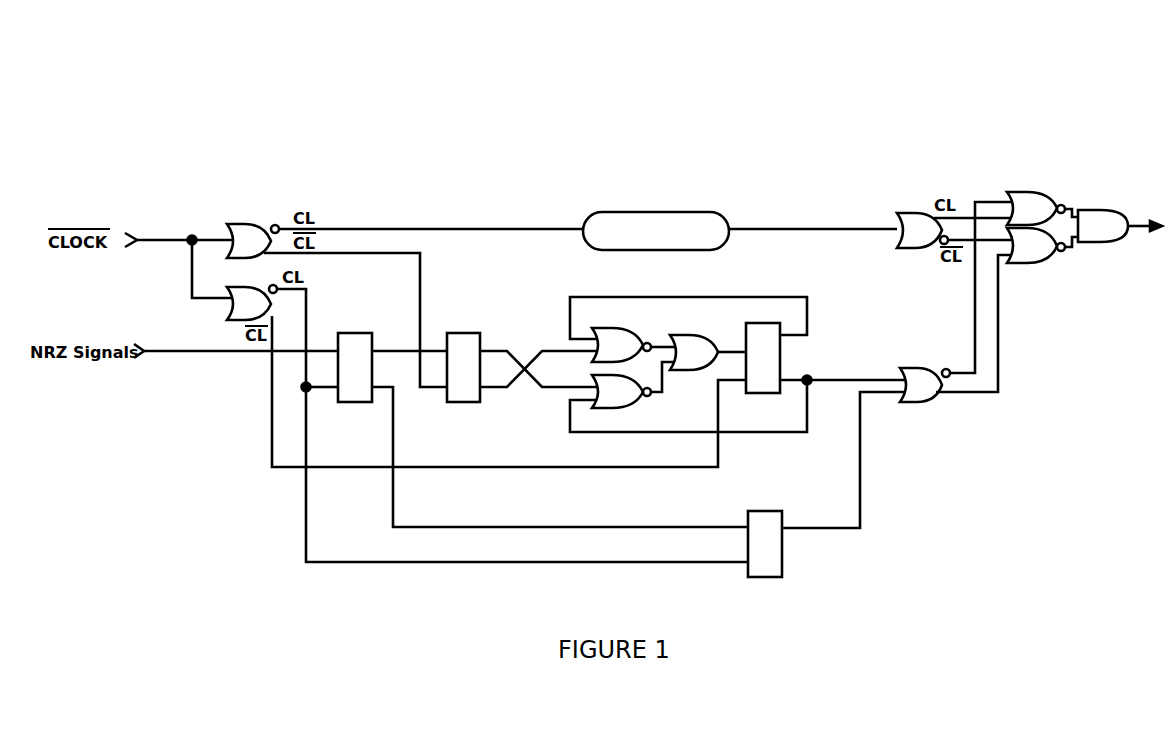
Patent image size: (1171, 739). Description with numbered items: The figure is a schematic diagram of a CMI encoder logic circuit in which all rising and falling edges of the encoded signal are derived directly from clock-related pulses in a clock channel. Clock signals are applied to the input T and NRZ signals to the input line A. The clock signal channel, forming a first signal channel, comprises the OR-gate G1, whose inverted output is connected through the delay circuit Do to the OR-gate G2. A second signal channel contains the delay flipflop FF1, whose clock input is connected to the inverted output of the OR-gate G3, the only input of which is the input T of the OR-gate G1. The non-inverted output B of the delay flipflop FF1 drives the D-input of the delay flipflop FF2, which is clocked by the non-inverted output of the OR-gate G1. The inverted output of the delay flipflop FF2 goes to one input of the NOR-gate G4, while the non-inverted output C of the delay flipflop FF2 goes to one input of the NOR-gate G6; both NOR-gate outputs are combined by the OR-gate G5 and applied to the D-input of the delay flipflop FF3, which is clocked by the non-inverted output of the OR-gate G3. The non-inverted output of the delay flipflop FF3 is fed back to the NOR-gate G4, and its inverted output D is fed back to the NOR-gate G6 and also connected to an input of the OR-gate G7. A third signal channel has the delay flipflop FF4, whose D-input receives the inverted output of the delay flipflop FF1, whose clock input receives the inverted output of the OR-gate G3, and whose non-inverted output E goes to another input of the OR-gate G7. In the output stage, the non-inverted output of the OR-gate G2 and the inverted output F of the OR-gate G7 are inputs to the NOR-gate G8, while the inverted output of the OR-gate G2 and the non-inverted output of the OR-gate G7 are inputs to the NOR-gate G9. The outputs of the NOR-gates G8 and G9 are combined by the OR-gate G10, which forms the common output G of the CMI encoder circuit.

The OR-gate G1 is at (255, 222).
The OR-gate G2 is at (908, 248).
The OR-gate G3 is at (232, 315).
The NOR-gate G4 is at (618, 328).
The OR-gate G5 is at (681, 335).
The NOR-gate G6 is at (624, 408).
The OR-gate G7 is at (928, 368).
The NOR-gate G8 is at (1022, 192).
The NOR-gate G9 is at (1024, 263).
The OR-gate G10 is at (1086, 210).
The delay flipflop FF1 is at (346, 402).
The delay flipflop FF2 is at (476, 402).
The delay flipflop FF3 is at (760, 393).
The delay flipflop FF4 is at (782, 572).
The delay circuit Do is at (684, 212).
The input T is at (188, 241).
The input line A is at (197, 352).
The non-inverted output B is at (386, 351).
The non-inverted output C is at (500, 351).
The inverted output D is at (827, 380).
The non-inverted output E is at (818, 528).
The inverted output F is at (975, 362).
The common output G is at (1135, 226).